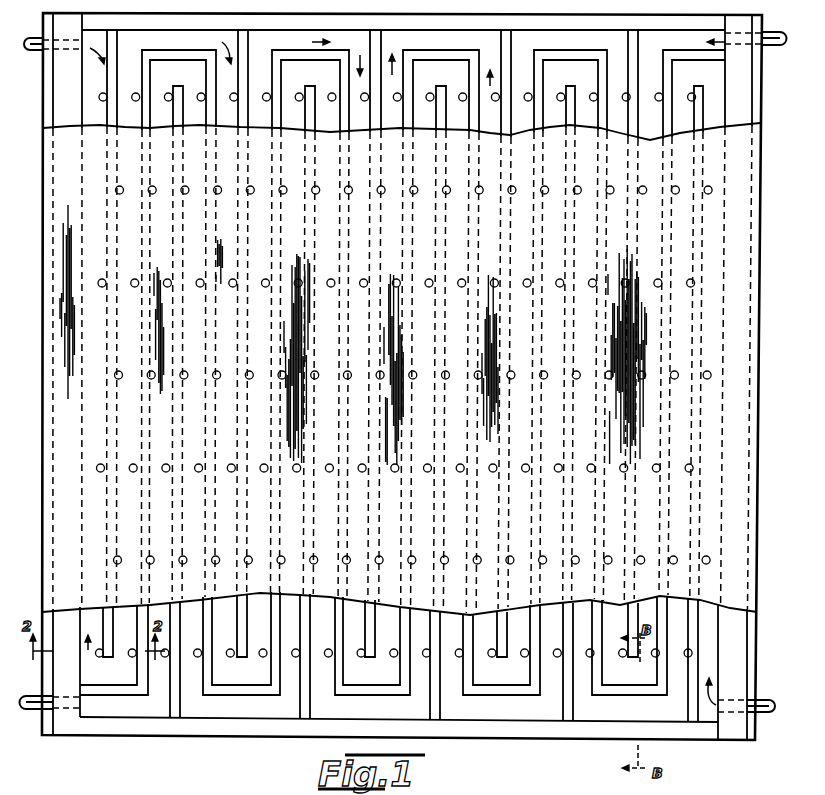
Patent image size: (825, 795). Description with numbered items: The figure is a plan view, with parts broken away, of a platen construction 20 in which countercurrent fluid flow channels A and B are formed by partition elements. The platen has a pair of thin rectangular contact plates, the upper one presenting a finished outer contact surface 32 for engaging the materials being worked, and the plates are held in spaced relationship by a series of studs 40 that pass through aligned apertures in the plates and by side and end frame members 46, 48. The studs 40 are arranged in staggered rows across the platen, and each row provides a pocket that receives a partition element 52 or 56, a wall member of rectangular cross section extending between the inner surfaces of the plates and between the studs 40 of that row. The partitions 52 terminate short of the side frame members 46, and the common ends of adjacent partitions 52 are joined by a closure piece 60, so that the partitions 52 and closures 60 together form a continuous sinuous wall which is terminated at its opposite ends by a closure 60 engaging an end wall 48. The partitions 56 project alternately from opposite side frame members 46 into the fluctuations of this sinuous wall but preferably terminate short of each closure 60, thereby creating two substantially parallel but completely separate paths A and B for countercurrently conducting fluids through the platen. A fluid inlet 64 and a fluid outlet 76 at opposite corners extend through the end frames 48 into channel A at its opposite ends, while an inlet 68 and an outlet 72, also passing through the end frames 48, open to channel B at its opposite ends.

The platen construction 20 is at (205, 738).
The finished outer contact surface 32 is at (400, 251).
The studs 40 is at (302, 92).
The side frame members 46 is at (281, 32).
The end frame members 48 is at (744, 105).
The partition element 52 is at (141, 75).
The partition element 56 is at (104, 80).
The closure piece 60 is at (519, 689).
The fluid inlet 64 is at (757, 703).
The fluid inlet 68 is at (53, 36).
The fluid outlet 72 is at (756, 30).
The fluid outlet 76 is at (35, 712).